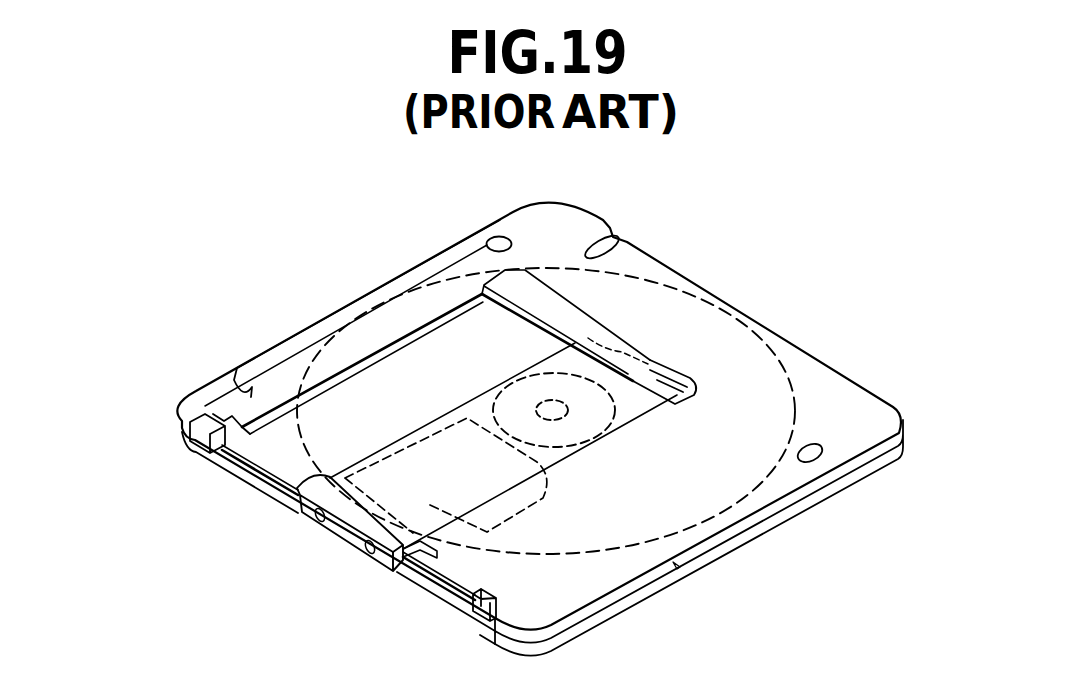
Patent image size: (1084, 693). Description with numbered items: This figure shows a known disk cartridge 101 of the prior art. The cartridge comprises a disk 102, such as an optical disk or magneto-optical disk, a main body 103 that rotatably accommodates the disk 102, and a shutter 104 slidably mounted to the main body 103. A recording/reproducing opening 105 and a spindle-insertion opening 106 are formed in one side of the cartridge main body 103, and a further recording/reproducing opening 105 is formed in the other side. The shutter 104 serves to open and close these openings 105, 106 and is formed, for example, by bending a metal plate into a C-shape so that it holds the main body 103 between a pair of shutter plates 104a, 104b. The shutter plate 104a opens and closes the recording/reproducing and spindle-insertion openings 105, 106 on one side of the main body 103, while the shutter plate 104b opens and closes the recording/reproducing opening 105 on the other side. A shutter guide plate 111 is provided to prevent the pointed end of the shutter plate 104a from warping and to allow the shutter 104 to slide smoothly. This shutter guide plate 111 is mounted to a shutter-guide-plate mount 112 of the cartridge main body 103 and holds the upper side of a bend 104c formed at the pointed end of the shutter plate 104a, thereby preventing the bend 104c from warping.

The disk cartridge 101 is at (285, 317).
The disk 102 is at (405, 294).
The main body 103 is at (452, 258).
The shutter 104 is at (200, 528).
The shutter plate 104a is at (315, 498).
The shutter plate 104b is at (433, 575).
The bend 104c is at (623, 353).
The recording/reproducing opening 105 is at (487, 502).
The spindle-insertion opening 106 is at (612, 427).
The shutter guide plate 111 is at (540, 302).
The shutter-guide-plate mount 112 is at (680, 378).